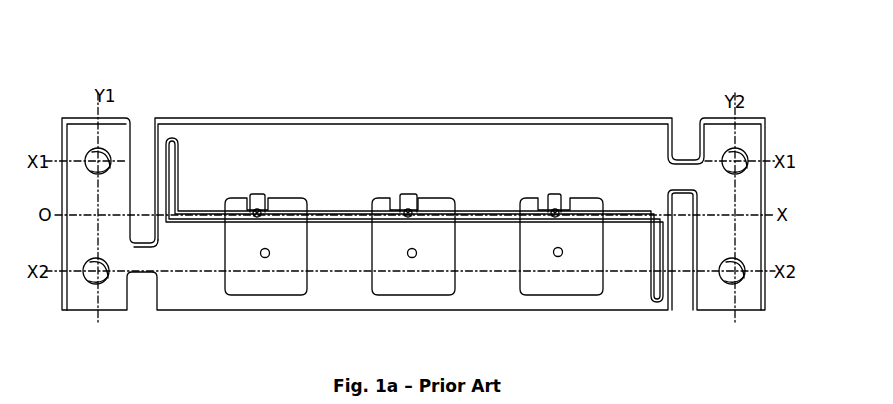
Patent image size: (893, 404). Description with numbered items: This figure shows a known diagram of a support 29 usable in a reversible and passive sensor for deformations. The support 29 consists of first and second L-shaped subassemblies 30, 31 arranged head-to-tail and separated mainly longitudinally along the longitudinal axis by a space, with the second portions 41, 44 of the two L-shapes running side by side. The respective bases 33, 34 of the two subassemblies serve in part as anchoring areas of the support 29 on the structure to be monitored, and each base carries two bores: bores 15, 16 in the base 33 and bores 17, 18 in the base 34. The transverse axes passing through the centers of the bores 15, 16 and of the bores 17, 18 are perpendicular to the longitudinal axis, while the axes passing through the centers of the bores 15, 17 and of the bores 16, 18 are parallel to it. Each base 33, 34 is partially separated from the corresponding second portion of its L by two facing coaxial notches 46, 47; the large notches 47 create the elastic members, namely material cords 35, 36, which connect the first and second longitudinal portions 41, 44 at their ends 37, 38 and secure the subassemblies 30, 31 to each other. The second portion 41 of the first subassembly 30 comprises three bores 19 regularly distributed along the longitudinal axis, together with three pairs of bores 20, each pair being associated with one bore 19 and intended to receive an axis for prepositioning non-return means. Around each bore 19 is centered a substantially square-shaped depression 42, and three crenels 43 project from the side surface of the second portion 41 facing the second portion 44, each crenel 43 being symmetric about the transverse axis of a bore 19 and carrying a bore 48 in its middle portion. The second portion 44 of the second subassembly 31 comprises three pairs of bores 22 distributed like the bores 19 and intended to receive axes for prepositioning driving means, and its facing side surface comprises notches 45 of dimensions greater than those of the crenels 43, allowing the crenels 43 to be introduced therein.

The bore 15 is at (87, 155).
The bore 16 is at (86, 265).
The bore 17 is at (747, 156).
The bore 18 is at (744, 266).
The bore 19 is at (267, 250).
The pair of bores 20 is at (515, 276).
The pair of bores 22 is at (292, 165).
The support 29 is at (247, 315).
The first L-shaped subassembly 30 is at (468, 290).
The second L-shaped subassembly 31 is at (452, 137).
The base 33 is at (82, 312).
The base 34 is at (718, 308).
The material cord 35 is at (178, 143).
The material cord 36 is at (657, 248).
The end 37 is at (178, 166).
The end 38 is at (653, 278).
The second portion 41 is at (343, 305).
The square-shaped depression 42 is at (370, 262).
The crenel 43 is at (257, 218).
The second portion 44 is at (377, 130).
The notch 45 is at (520, 200).
The notch 46 is at (140, 297).
The large notch 47 is at (143, 170).
The bore 48 is at (409, 217).